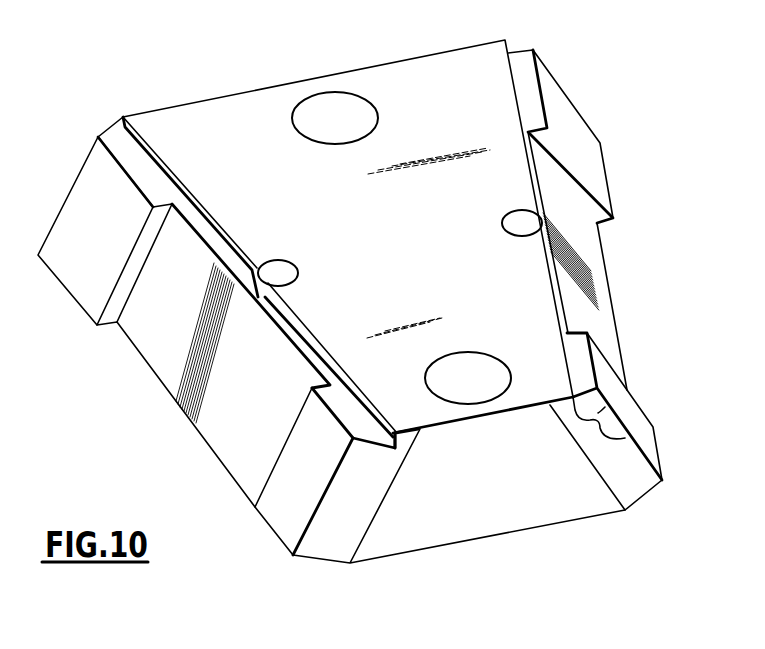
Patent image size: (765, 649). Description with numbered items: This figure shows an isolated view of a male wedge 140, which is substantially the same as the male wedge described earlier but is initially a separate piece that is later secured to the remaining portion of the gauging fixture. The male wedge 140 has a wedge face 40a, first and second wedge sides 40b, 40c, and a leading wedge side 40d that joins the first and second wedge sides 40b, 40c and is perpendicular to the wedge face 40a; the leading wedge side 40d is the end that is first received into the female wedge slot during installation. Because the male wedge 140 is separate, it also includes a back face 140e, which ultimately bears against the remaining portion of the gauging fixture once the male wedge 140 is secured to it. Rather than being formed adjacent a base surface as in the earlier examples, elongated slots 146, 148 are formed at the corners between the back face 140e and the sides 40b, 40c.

The male wedge 140 is at (583, 62).
The back face 140e is at (517, 313).
The wedge face 40a is at (428, 550).
The first wedge side 40b is at (237, 413).
The second wedge side 40c is at (590, 243).
The leading wedge side 40d is at (585, 504).
The elongated slot 146 is at (400, 449).
The elongated slot 148 is at (600, 430).